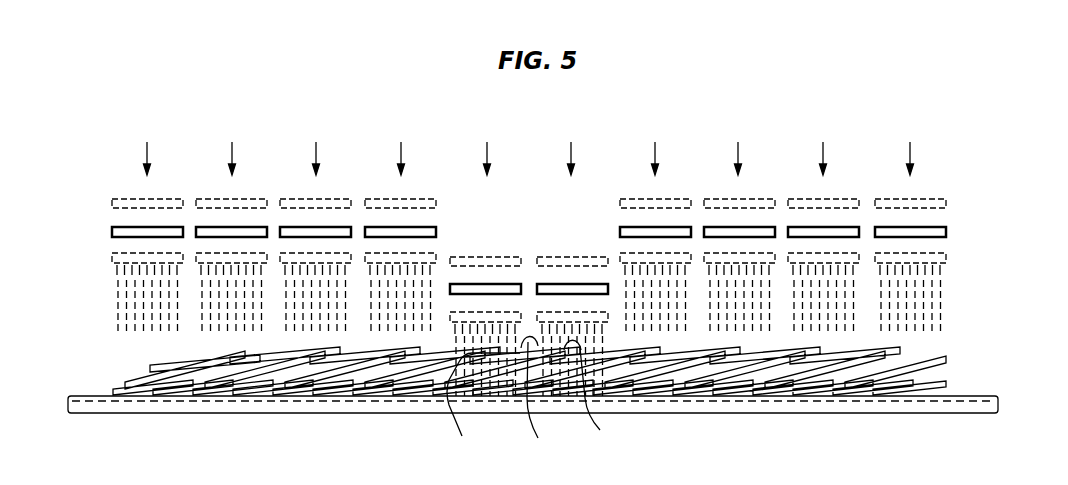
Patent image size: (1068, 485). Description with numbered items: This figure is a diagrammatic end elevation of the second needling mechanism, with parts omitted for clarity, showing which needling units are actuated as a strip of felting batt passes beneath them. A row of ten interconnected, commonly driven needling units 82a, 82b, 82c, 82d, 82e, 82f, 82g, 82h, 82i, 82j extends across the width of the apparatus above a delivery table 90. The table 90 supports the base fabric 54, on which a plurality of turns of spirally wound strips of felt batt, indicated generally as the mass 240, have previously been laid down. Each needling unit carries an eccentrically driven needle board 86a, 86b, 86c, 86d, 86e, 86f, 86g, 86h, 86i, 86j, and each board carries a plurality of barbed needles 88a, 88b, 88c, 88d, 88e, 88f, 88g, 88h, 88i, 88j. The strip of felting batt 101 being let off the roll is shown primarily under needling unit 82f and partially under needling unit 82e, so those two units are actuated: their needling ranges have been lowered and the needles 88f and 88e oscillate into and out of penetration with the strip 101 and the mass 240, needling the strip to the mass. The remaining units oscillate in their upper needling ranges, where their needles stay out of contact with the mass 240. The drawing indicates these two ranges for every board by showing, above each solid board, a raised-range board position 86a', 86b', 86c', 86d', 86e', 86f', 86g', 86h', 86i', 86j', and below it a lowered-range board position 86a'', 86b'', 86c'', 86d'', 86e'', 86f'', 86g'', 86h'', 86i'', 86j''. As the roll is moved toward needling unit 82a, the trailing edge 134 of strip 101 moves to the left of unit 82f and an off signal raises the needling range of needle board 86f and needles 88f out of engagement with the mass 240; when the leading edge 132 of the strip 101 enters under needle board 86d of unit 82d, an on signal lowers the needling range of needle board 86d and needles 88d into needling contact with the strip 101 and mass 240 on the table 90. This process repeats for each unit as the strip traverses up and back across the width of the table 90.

The needling unit 82a is at (147, 147).
The needling unit 82b is at (232, 147).
The needling unit 82c is at (315, 147).
The needling unit 82d is at (401, 147).
The needling unit 82e is at (487, 147).
The needling unit 82f is at (571, 147).
The needling unit 82g is at (655, 147).
The needling unit 82h is at (738, 147).
The needling unit 82i is at (822, 147).
The needling unit 82j is at (909, 147).
The needle board 86a is at (147, 224).
The needle board 86b is at (231, 224).
The needle board 86c is at (315, 224).
The needle board 86d is at (400, 224).
The needle board 86e is at (485, 281).
The needle board 86f is at (572, 281).
The needle board 86g is at (655, 224).
The needle board 86h is at (739, 224).
The needle board 86i is at (823, 224).
The needle board 86j is at (910, 224).
The upper mask position 86a' is at (147, 195).
The upper mask position 86b' is at (231, 195).
The upper mask position 86c' is at (315, 195).
The upper mask position 86d' is at (400, 195).
The upper mask position 86e' is at (485, 253).
The upper mask position 86f' is at (572, 253).
The upper mask position 86g' is at (655, 195).
The upper mask position 86h' is at (739, 195).
The upper mask position 86i' is at (823, 195).
The upper mask position 86j' is at (910, 195).
The lower mask position 86a'' is at (147, 256).
The lower mask position 86b'' is at (231, 256).
The lower mask position 86c'' is at (315, 256).
The lower mask position 86d'' is at (400, 256).
The lower mask position 86e'' is at (485, 315).
The lower mask position 86f'' is at (572, 315).
The lower mask position 86g'' is at (655, 256).
The lower mask position 86h'' is at (739, 256).
The lower mask position 86i'' is at (823, 256).
The lower mask position 86j'' is at (910, 256).
The barbed needles 88a is at (127, 294).
The barbed needles 88b is at (225, 318).
The barbed needles 88c is at (316, 318).
The barbed needles 88d is at (400, 318).
The barbed needles 88e is at (460, 348).
The barbed needles 88f is at (591, 343).
The barbed needles 88g is at (657, 308).
The barbed needles 88h is at (736, 310).
The barbed needles 88i is at (830, 318).
The barbed needles 88j is at (912, 318).
The mass of felting batt 240 is at (948, 367).
The leading edge 132 is at (483, 402).
The strip of felting batt 101 is at (545, 394).
The trailing edge 134 is at (597, 393).
The base fabric 54 is at (946, 394).
The table 90 is at (838, 408).